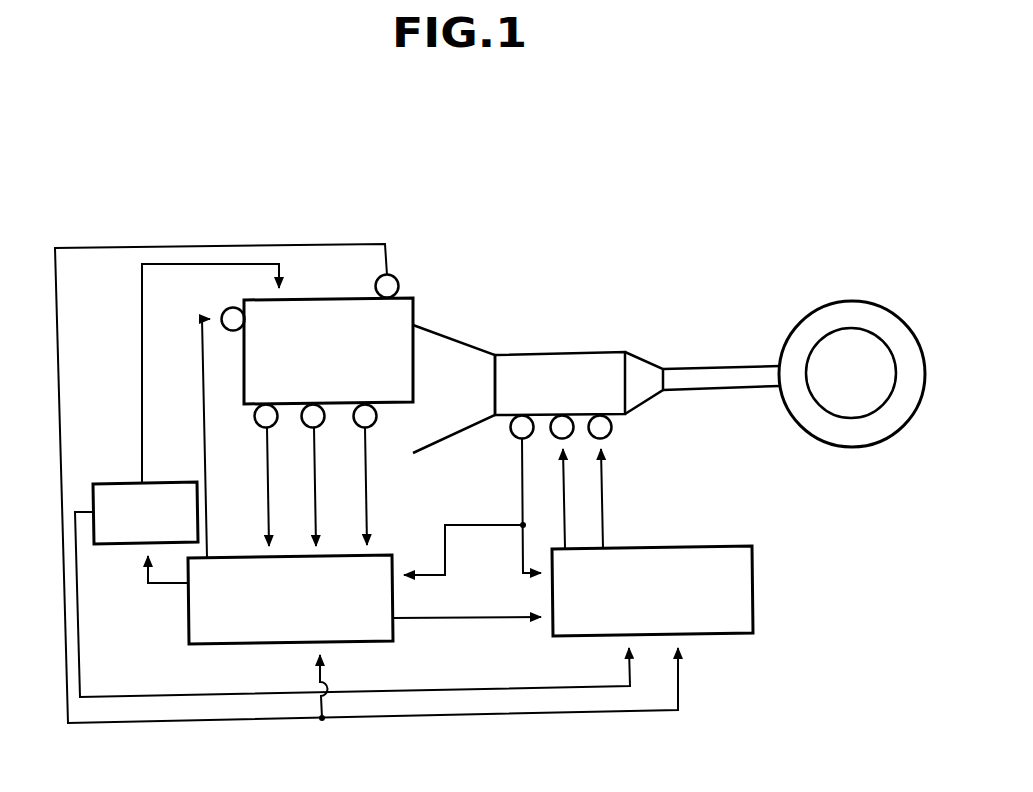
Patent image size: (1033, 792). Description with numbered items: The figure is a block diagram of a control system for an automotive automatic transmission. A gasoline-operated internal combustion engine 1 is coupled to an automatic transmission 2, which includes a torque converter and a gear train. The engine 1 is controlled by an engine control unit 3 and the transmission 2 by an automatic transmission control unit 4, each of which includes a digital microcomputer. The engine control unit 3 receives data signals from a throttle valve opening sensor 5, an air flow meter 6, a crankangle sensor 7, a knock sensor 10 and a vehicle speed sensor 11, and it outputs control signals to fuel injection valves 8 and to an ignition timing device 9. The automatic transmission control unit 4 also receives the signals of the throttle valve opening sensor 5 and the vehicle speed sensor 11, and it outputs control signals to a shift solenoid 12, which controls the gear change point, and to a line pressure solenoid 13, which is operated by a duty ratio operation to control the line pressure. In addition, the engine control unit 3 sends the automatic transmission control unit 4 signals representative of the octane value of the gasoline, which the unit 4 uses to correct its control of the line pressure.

The internal combustion engine 1 is at (325, 305).
The automatic transmission 2 is at (581, 352).
The engine control unit 3 is at (386, 556).
The automatic transmission control unit 4 is at (715, 547).
The throttle valve opening sensor 5 is at (398, 282).
The air flow meter 6 is at (375, 424).
The crankangle sensor 7 is at (322, 423).
The fuel injection valves 8 is at (233, 331).
The ignition timing device 9 is at (167, 482).
The knock sensor 10 is at (276, 424).
The vehicle speed sensor 11 is at (513, 436).
The shift solenoid 12 is at (611, 430).
The line pressure solenoid 13 is at (555, 436).